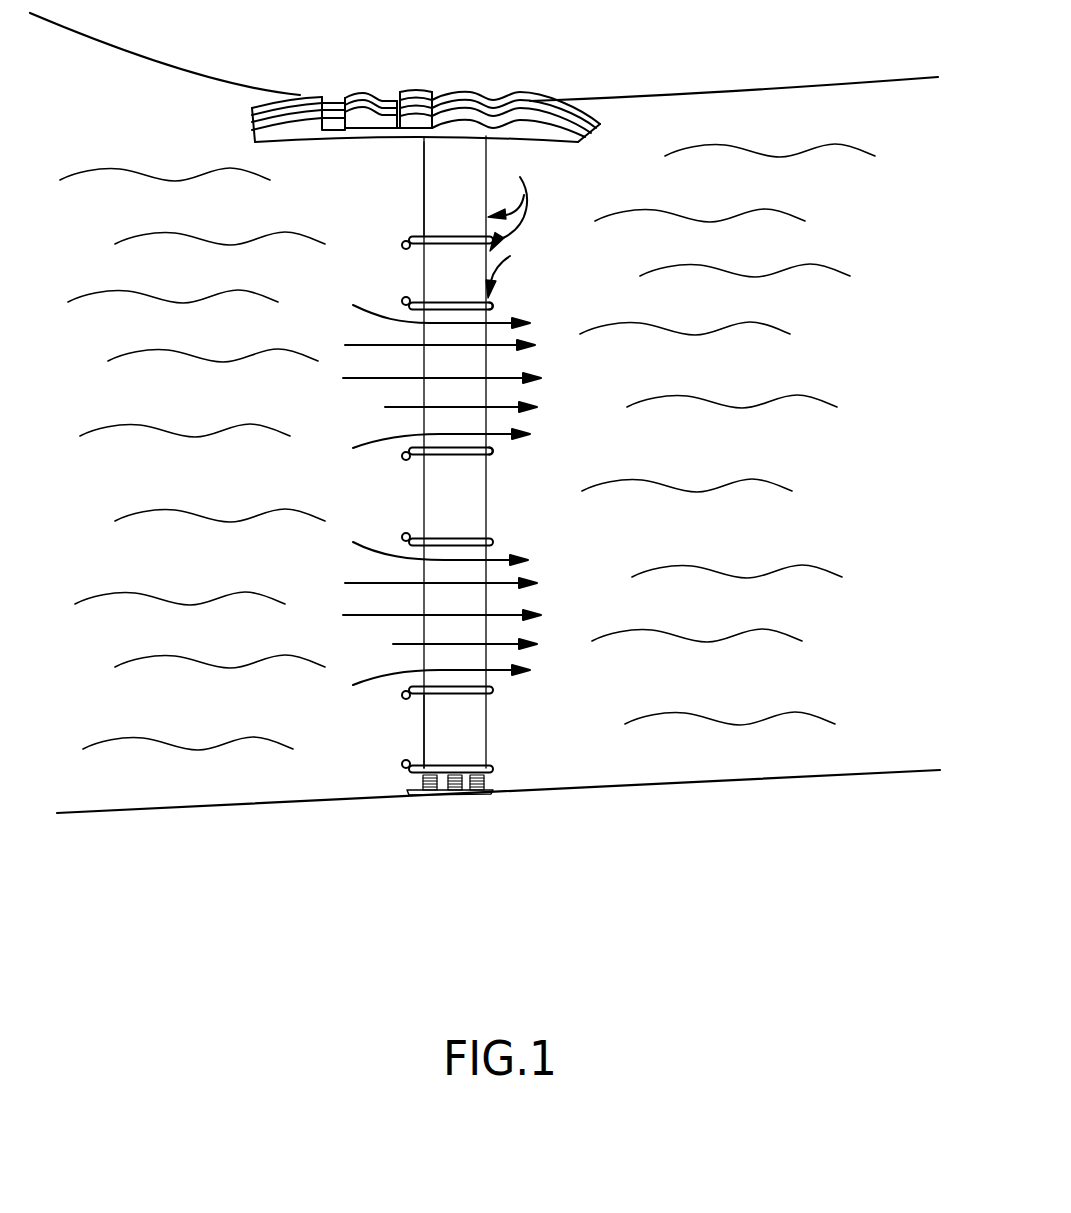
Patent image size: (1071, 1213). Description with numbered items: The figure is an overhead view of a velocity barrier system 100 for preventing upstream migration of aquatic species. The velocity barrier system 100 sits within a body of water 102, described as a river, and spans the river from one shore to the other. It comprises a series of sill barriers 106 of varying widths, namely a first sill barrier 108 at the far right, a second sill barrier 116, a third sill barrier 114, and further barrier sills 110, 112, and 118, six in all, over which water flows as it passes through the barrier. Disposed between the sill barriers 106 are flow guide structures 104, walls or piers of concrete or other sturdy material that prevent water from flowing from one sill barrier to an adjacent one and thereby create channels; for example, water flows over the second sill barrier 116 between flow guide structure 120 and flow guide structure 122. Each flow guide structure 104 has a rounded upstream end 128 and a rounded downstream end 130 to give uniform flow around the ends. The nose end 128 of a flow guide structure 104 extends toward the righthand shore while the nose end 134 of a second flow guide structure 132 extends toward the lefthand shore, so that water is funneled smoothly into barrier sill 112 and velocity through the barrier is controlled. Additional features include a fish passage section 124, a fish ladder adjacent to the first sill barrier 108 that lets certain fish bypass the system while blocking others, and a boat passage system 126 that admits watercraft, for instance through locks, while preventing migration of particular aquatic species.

The velocity barrier system 100 is at (602, 558).
The body of water 102 is at (890, 335).
The flow guide structure 104 is at (514, 270).
The sill barriers 106 is at (512, 199).
The first sill barrier 108 is at (430, 190).
The barrier sill 110 is at (430, 255).
The barrier sill 112 is at (423, 393).
The third sill barrier 114 is at (438, 492).
The second sill barrier 116 is at (424, 624).
The barrier sill 118 is at (430, 703).
The flow guide structure 120 is at (494, 542).
The flow guide structure 122 is at (494, 689).
The fish passage section 124 is at (533, 107).
The boat passage system 126 is at (482, 787).
The upstream end 128 is at (405, 303).
The downstream end 130 is at (494, 306).
The second flow guide structure 132 is at (494, 451).
The nose end 134 is at (403, 456).